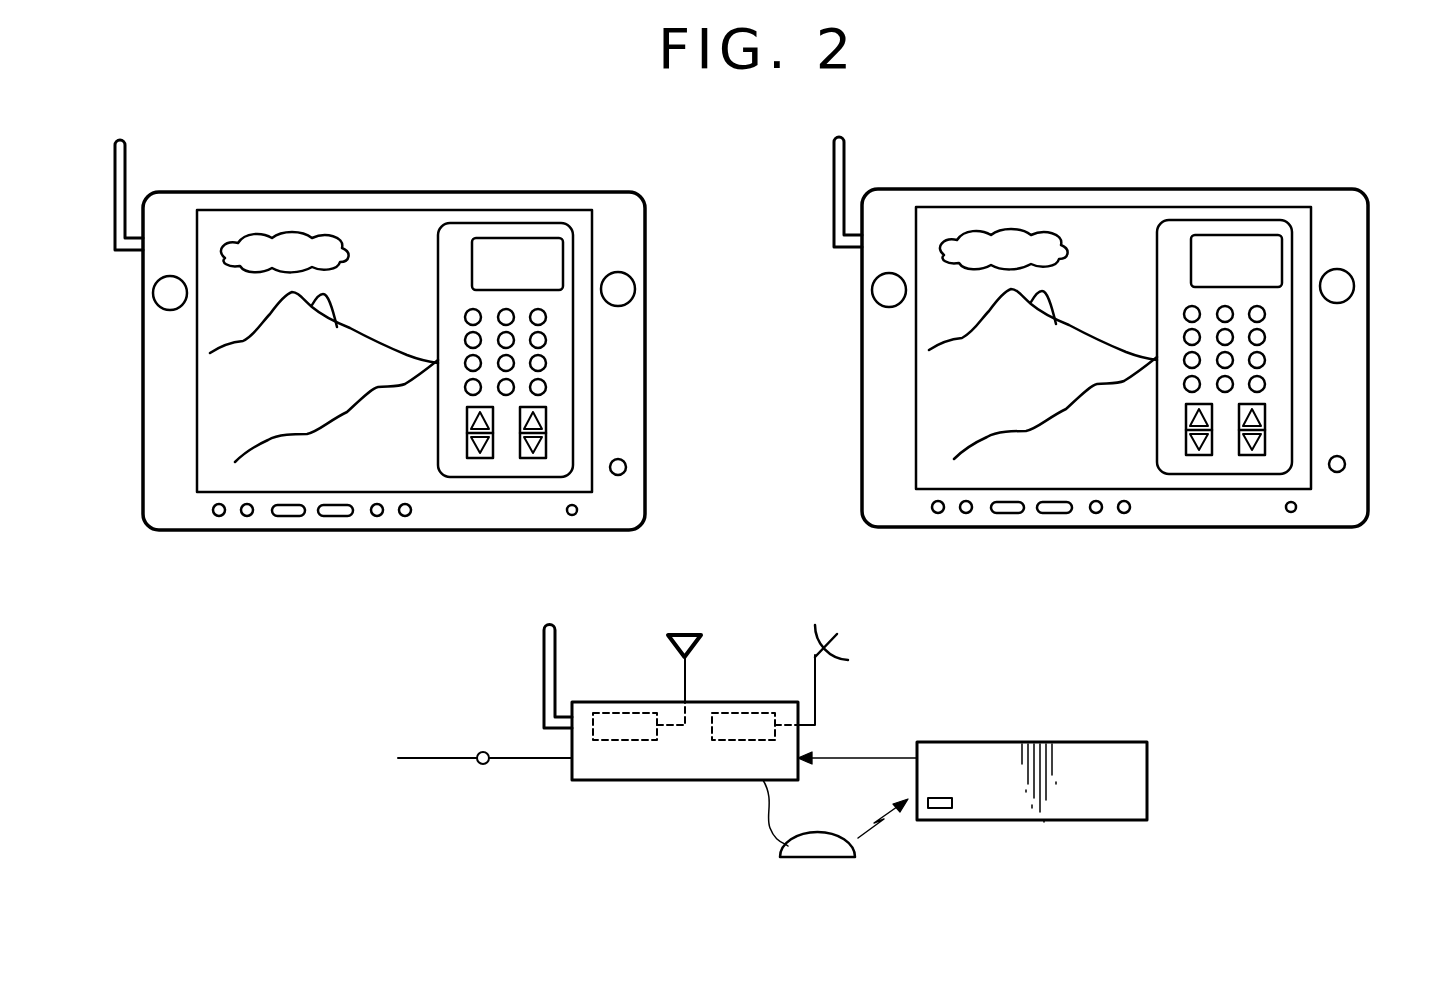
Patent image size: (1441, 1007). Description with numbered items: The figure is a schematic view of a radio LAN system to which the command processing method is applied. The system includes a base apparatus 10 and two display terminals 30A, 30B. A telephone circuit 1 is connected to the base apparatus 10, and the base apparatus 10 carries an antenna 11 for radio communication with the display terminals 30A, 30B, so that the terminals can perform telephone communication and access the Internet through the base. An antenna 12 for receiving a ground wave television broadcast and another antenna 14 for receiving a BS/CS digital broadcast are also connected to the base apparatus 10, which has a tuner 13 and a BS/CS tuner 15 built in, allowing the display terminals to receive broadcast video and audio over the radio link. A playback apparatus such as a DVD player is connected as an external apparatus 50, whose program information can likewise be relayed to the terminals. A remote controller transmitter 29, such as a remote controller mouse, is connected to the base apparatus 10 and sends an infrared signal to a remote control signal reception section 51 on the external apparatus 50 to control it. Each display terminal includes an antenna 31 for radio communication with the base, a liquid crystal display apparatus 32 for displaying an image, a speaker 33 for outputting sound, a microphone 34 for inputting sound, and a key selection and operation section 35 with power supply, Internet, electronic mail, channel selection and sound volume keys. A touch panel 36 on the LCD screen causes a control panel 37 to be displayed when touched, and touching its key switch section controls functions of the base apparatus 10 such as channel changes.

The telephone circuit 1 is at (430, 758).
The base apparatus 10 is at (613, 780).
The antenna 11 is at (544, 665).
The antenna 12 is at (685, 634).
The tuner 13 is at (610, 713).
The antenna 14 is at (850, 641).
The BS/CS tuner 15 is at (745, 713).
The remote controller transmitter 29 is at (828, 833).
The display terminal 30A is at (497, 190).
The display terminal 30B is at (1215, 187).
The antenna 31 is at (127, 152).
The liquid crystal display apparatus 32 is at (292, 210).
The speaker 33 is at (153, 293).
The microphone 34 is at (626, 467).
The key selection and operation section 35 is at (247, 516).
The touch panel 36 is at (207, 405).
The control panel 37 is at (503, 478).
The external apparatus 50 is at (1008, 742).
The remote control signal reception section 51 is at (940, 808).